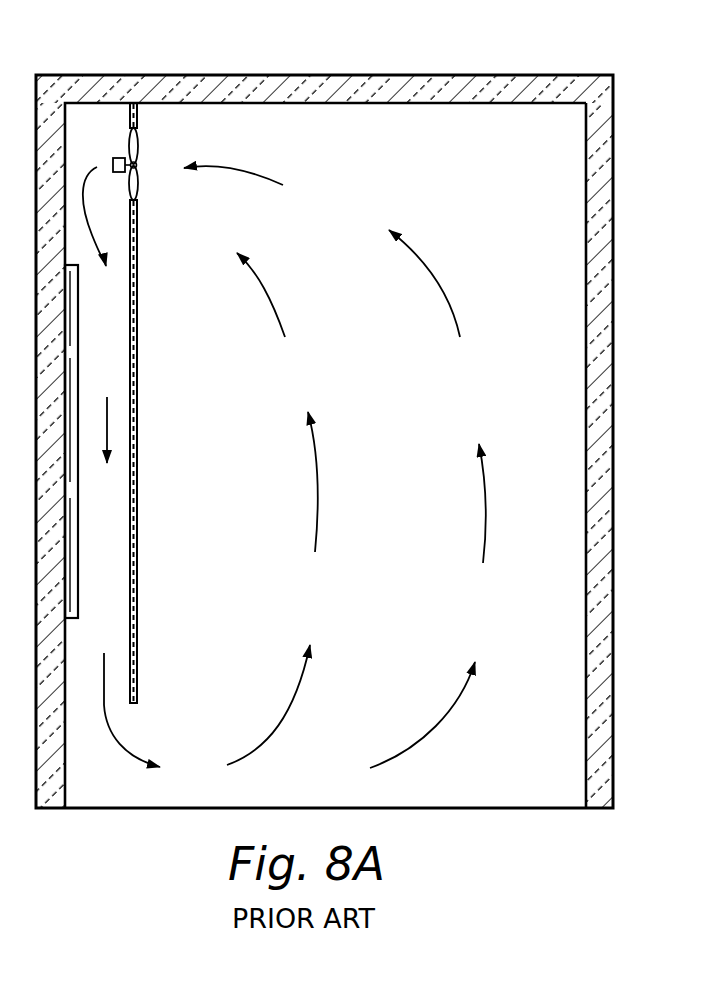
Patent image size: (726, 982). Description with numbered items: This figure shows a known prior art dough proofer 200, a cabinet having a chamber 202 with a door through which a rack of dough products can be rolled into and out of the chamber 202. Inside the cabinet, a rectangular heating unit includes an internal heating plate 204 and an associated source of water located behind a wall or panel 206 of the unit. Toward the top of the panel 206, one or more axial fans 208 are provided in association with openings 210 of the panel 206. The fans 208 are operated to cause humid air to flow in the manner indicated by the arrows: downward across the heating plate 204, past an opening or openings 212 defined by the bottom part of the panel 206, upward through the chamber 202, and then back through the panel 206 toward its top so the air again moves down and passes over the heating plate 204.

The dough proofer 200 is at (640, 182).
The chamber 202 is at (493, 360).
The heating plate 204 is at (74, 537).
The panel 206 is at (137, 370).
The axial fan 208 is at (137, 143).
The opening 210 is at (137, 200).
The opening 212 is at (123, 718).